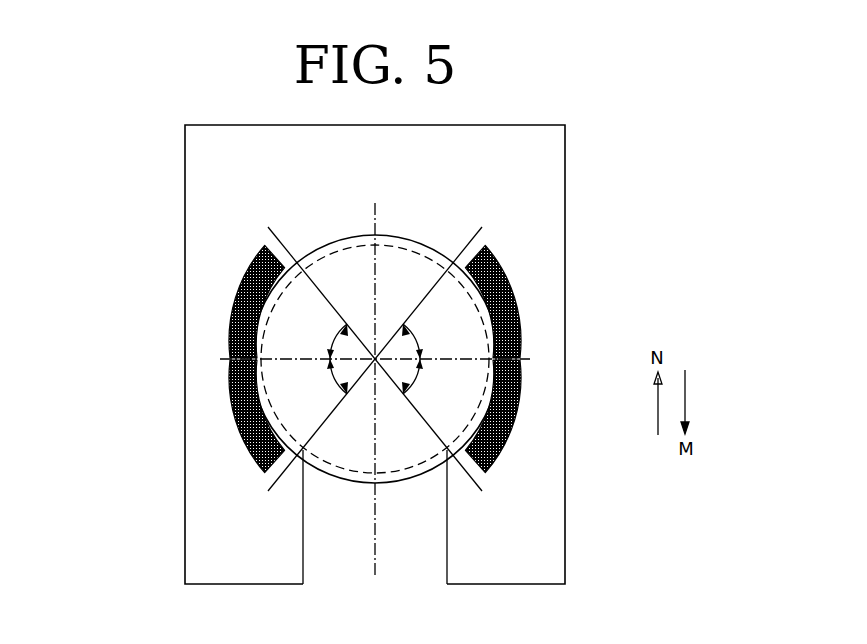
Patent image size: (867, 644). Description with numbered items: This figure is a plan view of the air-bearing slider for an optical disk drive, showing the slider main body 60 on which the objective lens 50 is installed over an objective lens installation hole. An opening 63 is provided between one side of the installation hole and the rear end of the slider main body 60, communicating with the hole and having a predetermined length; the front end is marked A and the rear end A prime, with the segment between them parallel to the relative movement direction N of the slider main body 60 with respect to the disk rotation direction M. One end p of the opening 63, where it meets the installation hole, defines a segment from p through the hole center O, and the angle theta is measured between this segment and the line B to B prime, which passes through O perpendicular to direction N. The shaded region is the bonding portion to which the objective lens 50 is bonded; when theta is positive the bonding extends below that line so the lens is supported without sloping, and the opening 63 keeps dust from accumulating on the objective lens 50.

The objective lens 50 is at (417, 243).
The slider main body 60 is at (170, 528).
The opening 63 is at (395, 560).
The end of the opening p is at (297, 452).